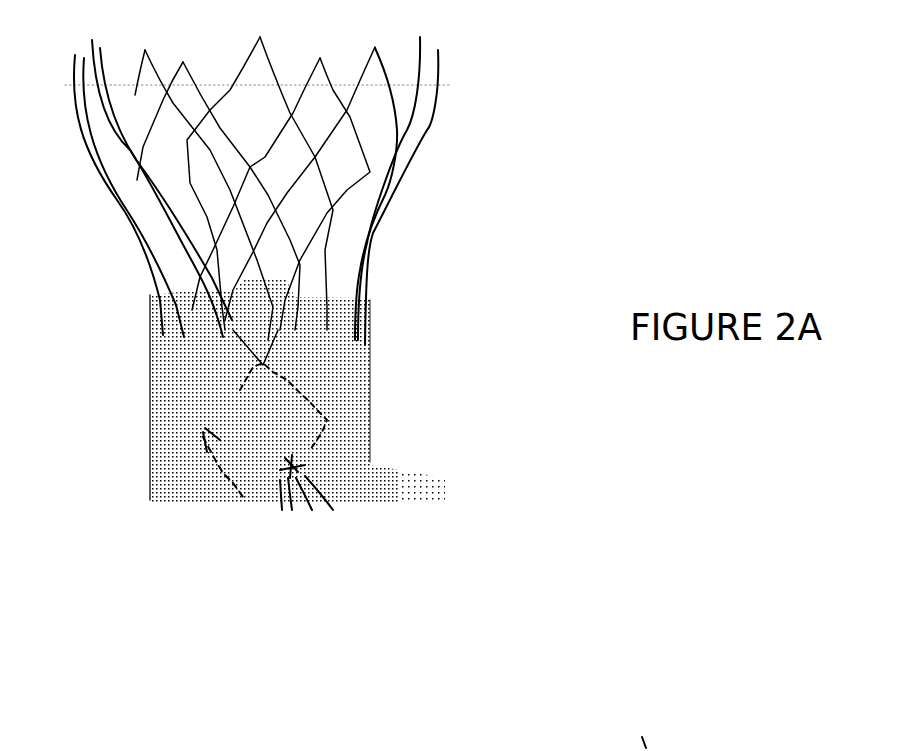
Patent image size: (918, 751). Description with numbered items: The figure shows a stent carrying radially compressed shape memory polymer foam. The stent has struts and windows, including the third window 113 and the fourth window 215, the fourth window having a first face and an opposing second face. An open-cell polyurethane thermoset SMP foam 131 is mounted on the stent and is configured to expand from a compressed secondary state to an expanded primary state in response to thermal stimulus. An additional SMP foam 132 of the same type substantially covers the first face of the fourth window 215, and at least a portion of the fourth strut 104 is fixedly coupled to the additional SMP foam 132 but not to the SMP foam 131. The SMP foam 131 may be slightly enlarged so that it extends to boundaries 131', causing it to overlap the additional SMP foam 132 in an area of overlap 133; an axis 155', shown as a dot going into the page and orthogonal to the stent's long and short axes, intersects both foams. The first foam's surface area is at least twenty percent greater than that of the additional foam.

The third window 113 is at (208, 428).
The SMP foam 131 is at (176, 498).
The boundaries 131' is at (364, 381).
The area of overlap 133 is at (435, 415).
The additional SMP foam 132 is at (503, 510).
The fourth window 215 is at (350, 548).
The axis 155' is at (395, 557).
The fourth strut 104 is at (315, 643).